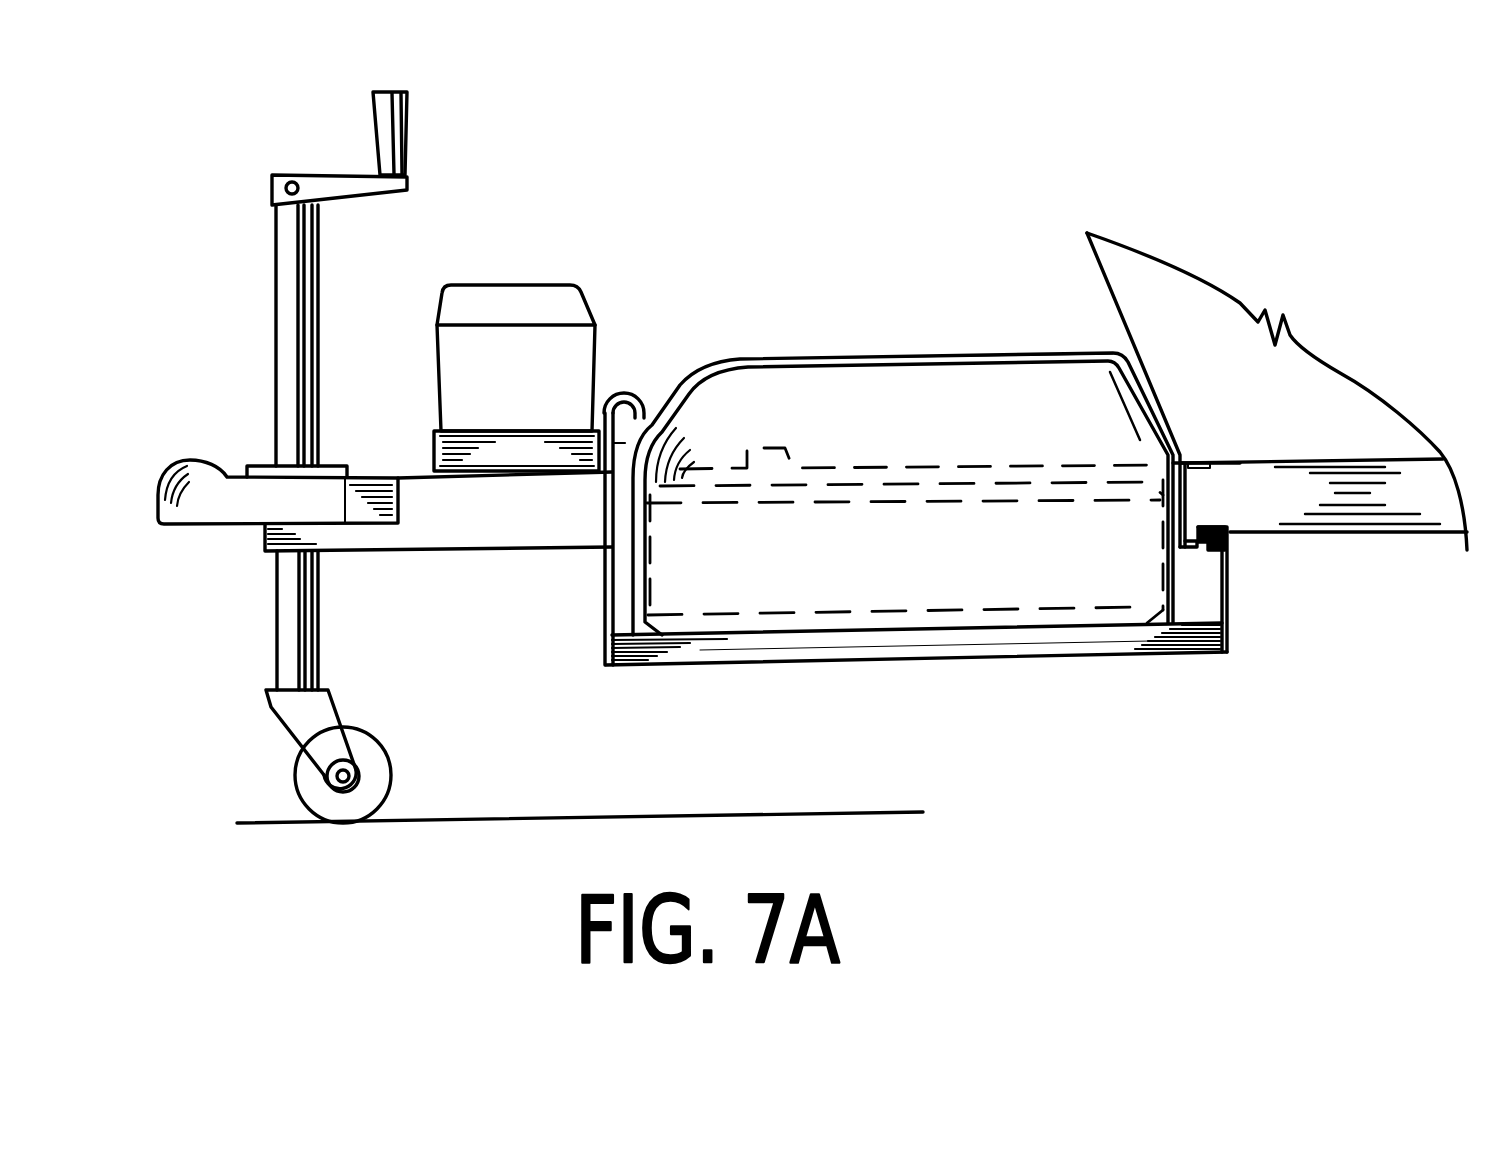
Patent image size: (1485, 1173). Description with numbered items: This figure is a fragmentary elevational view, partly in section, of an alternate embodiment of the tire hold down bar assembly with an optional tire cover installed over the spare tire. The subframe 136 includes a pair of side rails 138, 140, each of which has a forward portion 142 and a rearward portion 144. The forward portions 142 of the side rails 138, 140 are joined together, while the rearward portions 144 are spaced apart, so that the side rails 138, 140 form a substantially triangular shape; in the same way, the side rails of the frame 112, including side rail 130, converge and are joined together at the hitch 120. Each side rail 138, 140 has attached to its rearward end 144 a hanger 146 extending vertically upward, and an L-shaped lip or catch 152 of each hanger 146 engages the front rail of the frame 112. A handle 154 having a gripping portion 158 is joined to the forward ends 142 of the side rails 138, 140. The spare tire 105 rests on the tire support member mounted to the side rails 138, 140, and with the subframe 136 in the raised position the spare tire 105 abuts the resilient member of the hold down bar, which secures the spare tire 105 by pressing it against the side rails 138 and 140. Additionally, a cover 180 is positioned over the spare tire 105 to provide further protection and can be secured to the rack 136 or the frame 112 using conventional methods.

The spare tire 105 is at (960, 510).
The frame 112 is at (1028, 463).
The hitch 120 is at (190, 527).
The side rail 130 is at (633, 472).
The subframe 136 is at (1027, 682).
The side rail 138 is at (805, 664).
The side rail 140 is at (925, 660).
The forward portion 142 is at (633, 667).
The rearward portion 144 is at (1192, 654).
The hanger 146 is at (1228, 617).
The L-shaped lip or catch 152 is at (1192, 548).
The handle 154 is at (608, 583).
The gripping portion 158 is at (624, 393).
The cover 180 is at (836, 357).